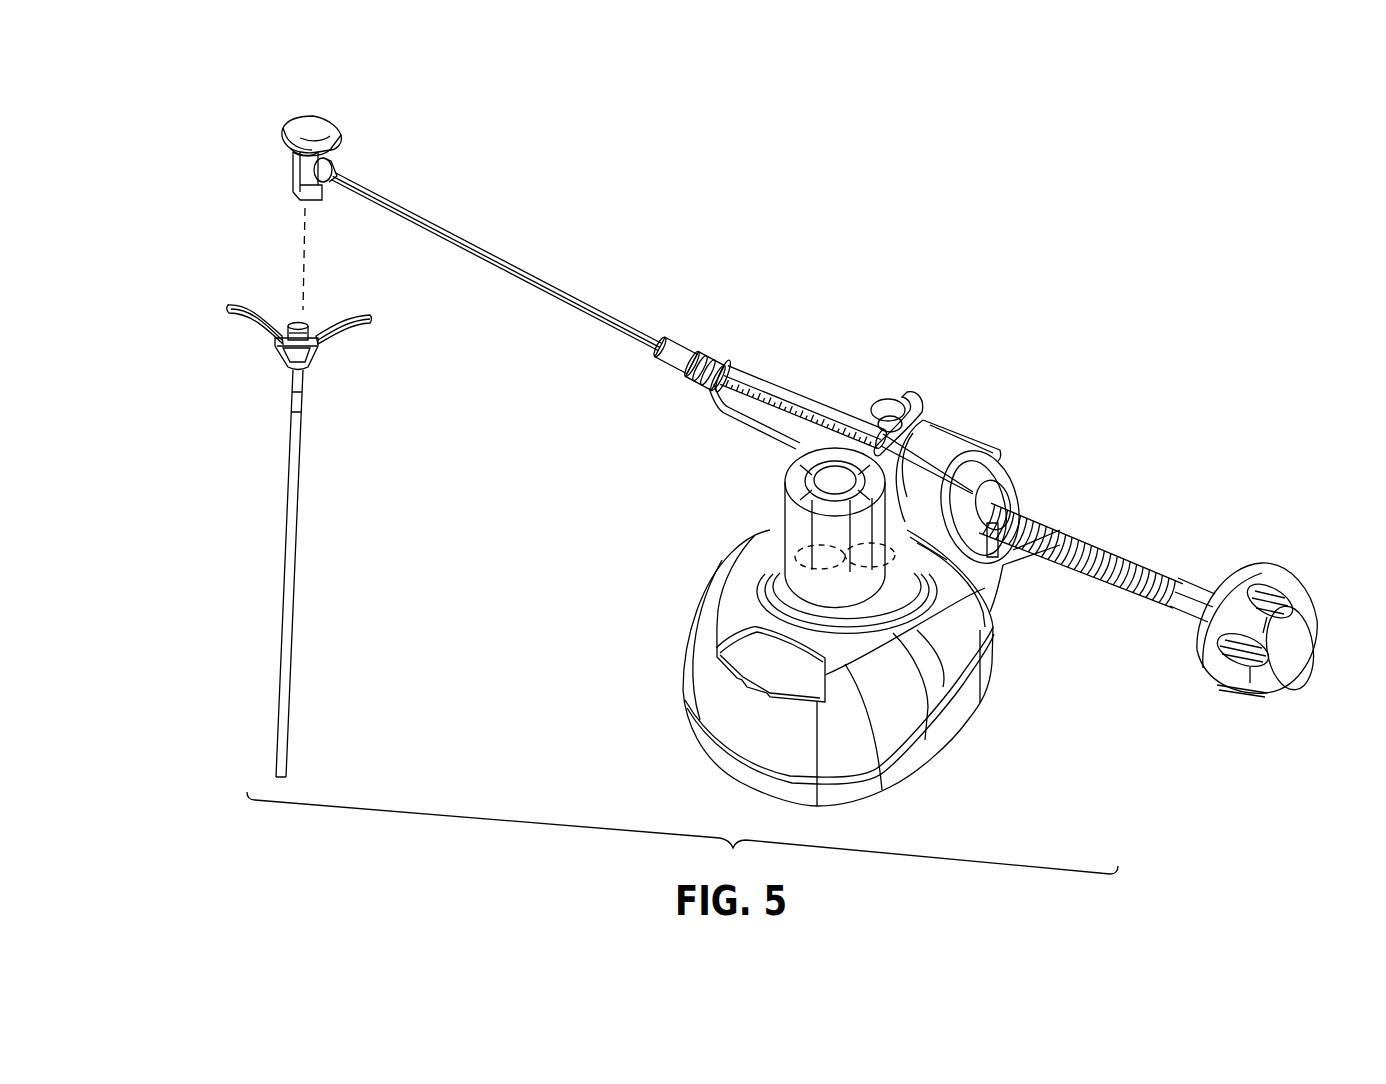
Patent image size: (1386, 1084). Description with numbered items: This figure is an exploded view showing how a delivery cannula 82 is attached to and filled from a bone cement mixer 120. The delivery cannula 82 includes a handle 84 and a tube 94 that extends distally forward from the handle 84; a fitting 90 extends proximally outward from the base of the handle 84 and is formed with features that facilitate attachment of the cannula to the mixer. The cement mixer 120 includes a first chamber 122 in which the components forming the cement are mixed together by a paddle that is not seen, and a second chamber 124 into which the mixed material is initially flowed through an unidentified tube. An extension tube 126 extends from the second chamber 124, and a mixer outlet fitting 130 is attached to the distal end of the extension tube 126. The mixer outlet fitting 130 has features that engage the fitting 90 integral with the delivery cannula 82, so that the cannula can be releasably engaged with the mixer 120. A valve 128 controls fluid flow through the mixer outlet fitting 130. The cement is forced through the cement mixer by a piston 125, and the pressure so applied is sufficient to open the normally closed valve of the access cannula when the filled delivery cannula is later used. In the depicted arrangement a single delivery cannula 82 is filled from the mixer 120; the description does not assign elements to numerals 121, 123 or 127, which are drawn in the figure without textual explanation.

The delivery cannula 82 is at (336, 388).
The handle 84 is at (253, 327).
The fitting 90 is at (308, 330).
The tube 94 is at (285, 548).
The cement mixer 120 is at (559, 447).
The hidden axis 121 is at (815, 552).
The first chamber 122 is at (768, 530).
The clamp 123 is at (920, 392).
The second chamber 124 is at (1003, 425).
The piston 125 is at (1097, 542).
The extension tube 126 is at (470, 238).
The knob 127 is at (1283, 670).
The valve 128 is at (308, 133).
The mixer outlet fitting 130 is at (295, 195).